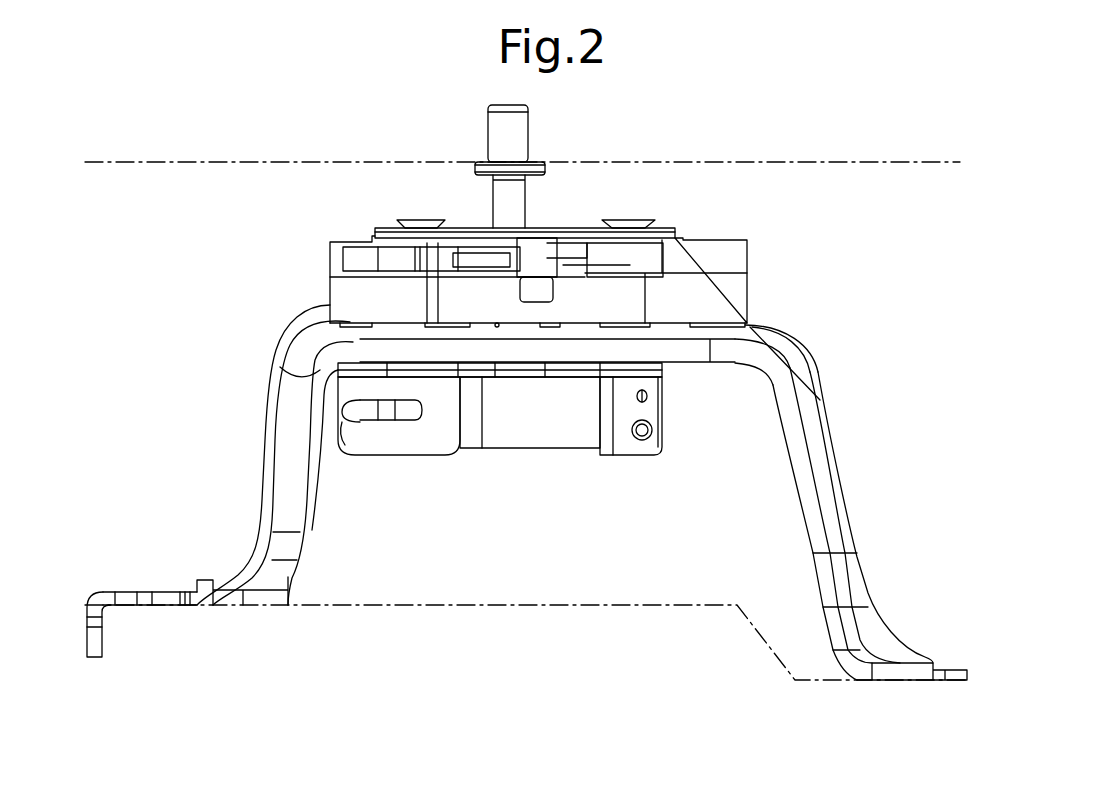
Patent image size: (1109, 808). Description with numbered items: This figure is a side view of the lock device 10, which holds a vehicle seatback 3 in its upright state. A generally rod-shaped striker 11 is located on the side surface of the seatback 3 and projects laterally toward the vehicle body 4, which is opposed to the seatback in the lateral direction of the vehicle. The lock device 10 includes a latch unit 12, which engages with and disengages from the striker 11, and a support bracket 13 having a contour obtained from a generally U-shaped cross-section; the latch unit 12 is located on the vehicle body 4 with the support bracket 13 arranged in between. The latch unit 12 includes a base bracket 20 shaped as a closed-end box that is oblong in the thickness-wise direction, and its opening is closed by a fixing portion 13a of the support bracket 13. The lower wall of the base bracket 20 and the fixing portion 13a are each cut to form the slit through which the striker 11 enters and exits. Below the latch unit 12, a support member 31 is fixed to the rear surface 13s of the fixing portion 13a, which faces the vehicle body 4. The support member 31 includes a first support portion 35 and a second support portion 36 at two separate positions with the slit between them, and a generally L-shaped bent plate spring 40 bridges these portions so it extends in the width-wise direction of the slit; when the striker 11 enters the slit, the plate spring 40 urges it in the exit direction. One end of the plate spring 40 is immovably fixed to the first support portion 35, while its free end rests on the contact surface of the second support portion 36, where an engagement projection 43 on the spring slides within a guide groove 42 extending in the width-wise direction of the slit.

The seatback 3 is at (150, 163).
The vehicle body 4 is at (605, 605).
The lock device 10 is at (178, 433).
The striker 11 is at (527, 205).
The latch unit 12 is at (745, 240).
The support bracket 13 is at (527, 481).
The fixing portion 13a is at (750, 325).
The rear surface 13s is at (693, 366).
The base bracket 20 is at (473, 228).
The support member 31 is at (662, 439).
The first support portion 35 is at (655, 418).
The second support portion 36 is at (390, 440).
The plate spring 40 is at (520, 452).
The guide groove 42 is at (350, 440).
The engagement projection 43 is at (400, 420).